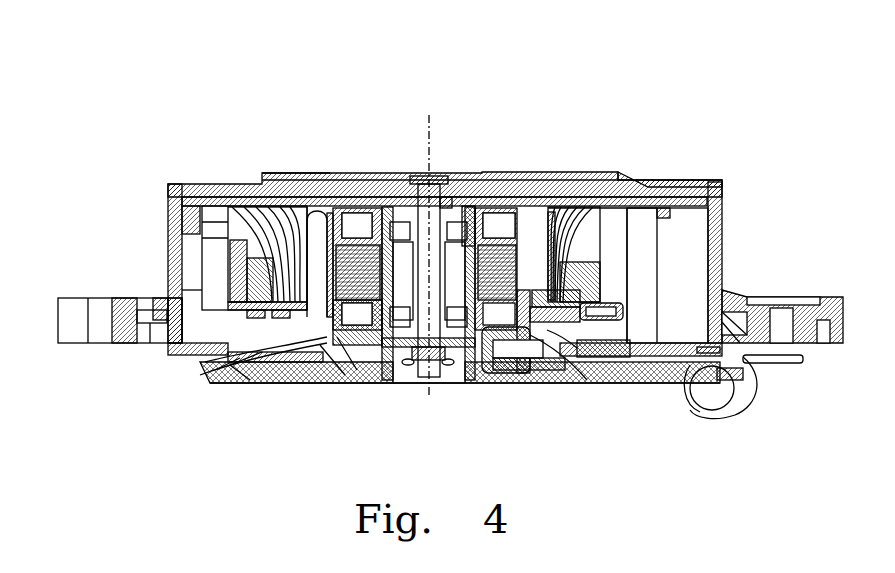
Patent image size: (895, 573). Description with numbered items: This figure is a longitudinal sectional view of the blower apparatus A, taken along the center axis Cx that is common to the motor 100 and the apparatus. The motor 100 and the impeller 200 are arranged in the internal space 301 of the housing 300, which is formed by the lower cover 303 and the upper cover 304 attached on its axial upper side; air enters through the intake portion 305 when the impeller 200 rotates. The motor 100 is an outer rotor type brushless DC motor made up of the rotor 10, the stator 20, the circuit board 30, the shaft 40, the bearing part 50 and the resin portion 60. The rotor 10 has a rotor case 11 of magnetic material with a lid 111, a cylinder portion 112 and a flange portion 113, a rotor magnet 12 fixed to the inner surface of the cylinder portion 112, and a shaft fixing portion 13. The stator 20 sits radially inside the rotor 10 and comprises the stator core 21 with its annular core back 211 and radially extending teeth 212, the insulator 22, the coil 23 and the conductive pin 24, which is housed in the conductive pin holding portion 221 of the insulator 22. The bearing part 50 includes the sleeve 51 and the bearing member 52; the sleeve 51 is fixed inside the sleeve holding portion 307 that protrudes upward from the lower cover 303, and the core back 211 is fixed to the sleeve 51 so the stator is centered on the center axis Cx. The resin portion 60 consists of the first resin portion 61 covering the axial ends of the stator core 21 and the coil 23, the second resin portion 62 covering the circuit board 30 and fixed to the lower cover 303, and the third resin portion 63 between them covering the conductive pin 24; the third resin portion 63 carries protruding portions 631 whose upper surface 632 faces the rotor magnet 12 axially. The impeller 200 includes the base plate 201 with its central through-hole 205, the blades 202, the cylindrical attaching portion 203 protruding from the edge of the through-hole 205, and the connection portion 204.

The blower apparatus A is at (722, 105).
The shaft 40 is at (418, 173).
The center axis Cx is at (430, 137).
The motor 100 is at (343, 185).
The rotor 10 is at (355, 192).
The intake portion 305 is at (262, 190).
The coil 23 is at (352, 218).
The bearing member 52 is at (386, 200).
The shaft fixing portion 13 is at (448, 188).
The lid 111 is at (495, 215).
The housing 300 is at (584, 166).
The upper cover 304 is at (660, 188).
The sleeve 51 is at (720, 186).
The rotor case 11 is at (690, 240).
The rotor magnet 12 is at (600, 262).
The cylinder portion 112 is at (600, 280).
The lower cover 303 is at (740, 342).
The internal space 301 is at (652, 330).
The flange portion 113 is at (585, 322).
The teeth 212 is at (550, 362).
The core back 211 is at (495, 352).
The stator core 21 is at (560, 318).
The through-hole 205 is at (580, 365).
The sleeve holding portion 307 is at (470, 374).
The bearing part 50 is at (439, 378).
The insulator 22 is at (390, 300).
The conductive pin holding portion 221 is at (386, 340).
The conductive pin 24 is at (340, 367).
The second resin portion 62 is at (317, 364).
The circuit board 30 is at (292, 363).
The third resin portion 63 is at (270, 370).
The protruding portion 631 is at (255, 378).
The upper surface 632 is at (228, 364).
The connection portion 204 is at (190, 350).
The base plate 201 is at (175, 330).
The resin portion 60 is at (90, 321).
The attaching portion 203 is at (168, 290).
The first resin portion 61 is at (318, 300).
The stator 20 is at (262, 252).
The blades 202 is at (245, 225).
The impeller 200 is at (210, 205).